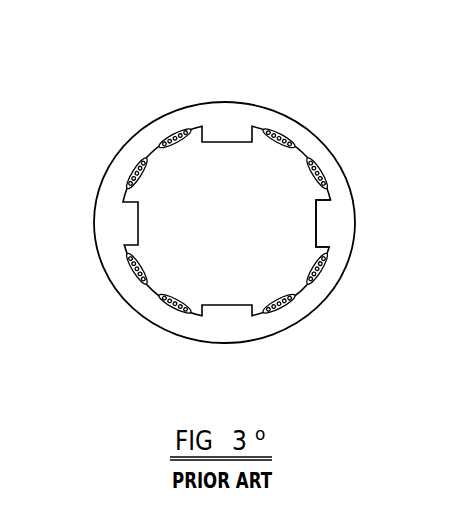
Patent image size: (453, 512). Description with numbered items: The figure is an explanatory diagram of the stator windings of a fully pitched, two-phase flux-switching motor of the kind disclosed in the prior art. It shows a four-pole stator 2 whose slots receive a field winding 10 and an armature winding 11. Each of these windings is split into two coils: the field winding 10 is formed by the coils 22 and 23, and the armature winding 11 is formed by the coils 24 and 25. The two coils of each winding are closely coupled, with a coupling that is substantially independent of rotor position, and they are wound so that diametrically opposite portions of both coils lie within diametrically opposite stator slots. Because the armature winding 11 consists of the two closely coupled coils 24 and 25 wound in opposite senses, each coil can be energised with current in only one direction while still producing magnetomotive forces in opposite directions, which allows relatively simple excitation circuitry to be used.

The four-pole stator 2 is at (224, 362).
The field winding 10 is at (197, 127).
The armature winding 11 is at (333, 199).
The coil 22 is at (177, 140).
The coil 23 is at (137, 174).
The armature coil 24 is at (277, 137).
The armature coil 25 is at (321, 178).